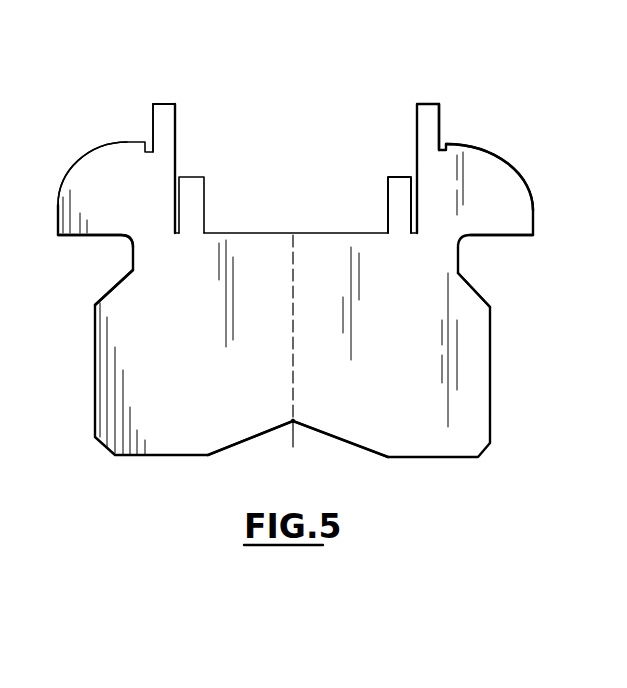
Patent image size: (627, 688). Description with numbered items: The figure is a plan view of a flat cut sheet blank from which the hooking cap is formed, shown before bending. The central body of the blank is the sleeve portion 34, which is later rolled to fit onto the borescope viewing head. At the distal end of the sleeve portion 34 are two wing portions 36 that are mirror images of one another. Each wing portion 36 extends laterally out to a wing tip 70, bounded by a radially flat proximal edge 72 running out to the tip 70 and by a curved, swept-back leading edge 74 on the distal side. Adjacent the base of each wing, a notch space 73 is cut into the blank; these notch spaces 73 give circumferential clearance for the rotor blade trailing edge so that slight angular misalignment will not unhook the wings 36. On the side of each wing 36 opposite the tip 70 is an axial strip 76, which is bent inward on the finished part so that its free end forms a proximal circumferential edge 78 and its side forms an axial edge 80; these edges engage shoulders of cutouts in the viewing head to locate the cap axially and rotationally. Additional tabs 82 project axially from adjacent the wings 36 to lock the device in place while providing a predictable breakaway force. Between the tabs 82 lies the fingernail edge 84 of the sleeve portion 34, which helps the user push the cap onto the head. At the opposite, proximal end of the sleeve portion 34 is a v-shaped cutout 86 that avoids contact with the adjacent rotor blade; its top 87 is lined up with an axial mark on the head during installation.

The sleeve portion 34 is at (472, 362).
The wing portion 36 is at (85, 168).
The wing tip 70 is at (533, 237).
The proximal edge 72 is at (103, 240).
The notch space 73 is at (117, 262).
The leading edge 74 is at (117, 145).
The axial strip 76 is at (167, 128).
The circumferential edge 78 is at (165, 104).
The axial edge 80 is at (175, 150).
The tab 82 is at (197, 205).
The fingernail edge 84 is at (273, 233).
The v-shaped cutout 86 is at (303, 437).
The top of the notch 87 is at (296, 419).